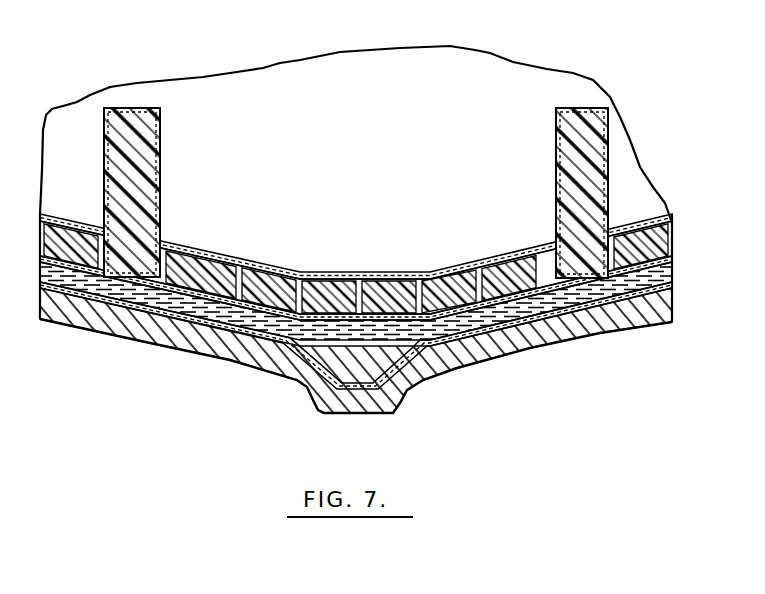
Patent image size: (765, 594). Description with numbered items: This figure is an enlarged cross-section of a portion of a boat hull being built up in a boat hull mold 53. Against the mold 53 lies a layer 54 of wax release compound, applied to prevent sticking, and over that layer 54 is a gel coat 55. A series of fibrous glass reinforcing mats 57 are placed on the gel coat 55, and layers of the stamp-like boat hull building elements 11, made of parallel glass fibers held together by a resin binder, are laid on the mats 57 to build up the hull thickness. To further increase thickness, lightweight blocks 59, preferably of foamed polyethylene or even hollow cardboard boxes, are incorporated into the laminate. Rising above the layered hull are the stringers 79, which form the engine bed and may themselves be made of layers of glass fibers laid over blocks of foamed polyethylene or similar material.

The boat hull building element 11 is at (358, 318).
The boat hull mold 53 is at (102, 320).
The layer of wax release compound 54 is at (508, 330).
The gel coat 55 is at (552, 327).
The fibrous glass reinforcing mats 57 is at (642, 323).
The blocks 59 is at (177, 272).
The stringer 79 is at (160, 140).